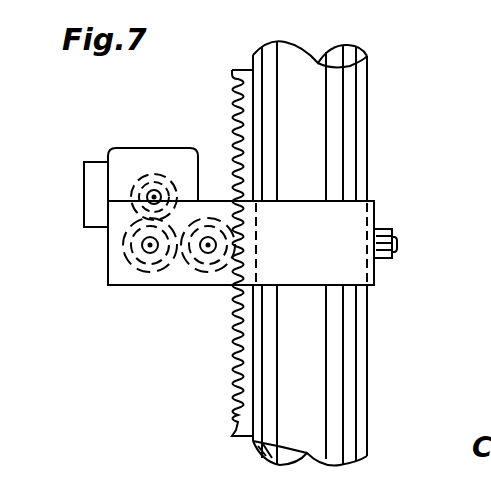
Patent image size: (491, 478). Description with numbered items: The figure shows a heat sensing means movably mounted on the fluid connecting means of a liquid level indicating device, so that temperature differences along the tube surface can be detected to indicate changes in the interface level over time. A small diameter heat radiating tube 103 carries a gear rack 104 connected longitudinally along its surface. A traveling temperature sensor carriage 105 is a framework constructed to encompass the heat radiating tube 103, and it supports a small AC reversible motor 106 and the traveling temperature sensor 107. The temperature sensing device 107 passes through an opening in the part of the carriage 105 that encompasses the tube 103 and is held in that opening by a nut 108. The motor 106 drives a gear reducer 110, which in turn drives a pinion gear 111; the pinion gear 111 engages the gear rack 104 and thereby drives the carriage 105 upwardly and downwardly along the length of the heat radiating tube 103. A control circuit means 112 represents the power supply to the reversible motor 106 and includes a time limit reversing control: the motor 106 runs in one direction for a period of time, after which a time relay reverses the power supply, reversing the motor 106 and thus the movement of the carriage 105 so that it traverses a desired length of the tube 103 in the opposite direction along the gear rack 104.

The heat radiating tube 103 is at (335, 116).
The gear rack 104 is at (246, 87).
The traveling temperature sensor carriage 105 is at (334, 261).
The AC reversible motor 106 is at (137, 158).
The traveling temperature sensor 107 is at (391, 258).
The nut 108 is at (396, 241).
The gear reducer 110 is at (134, 287).
The pinion gear 111 is at (202, 285).
The control circuit means 112 is at (92, 193).